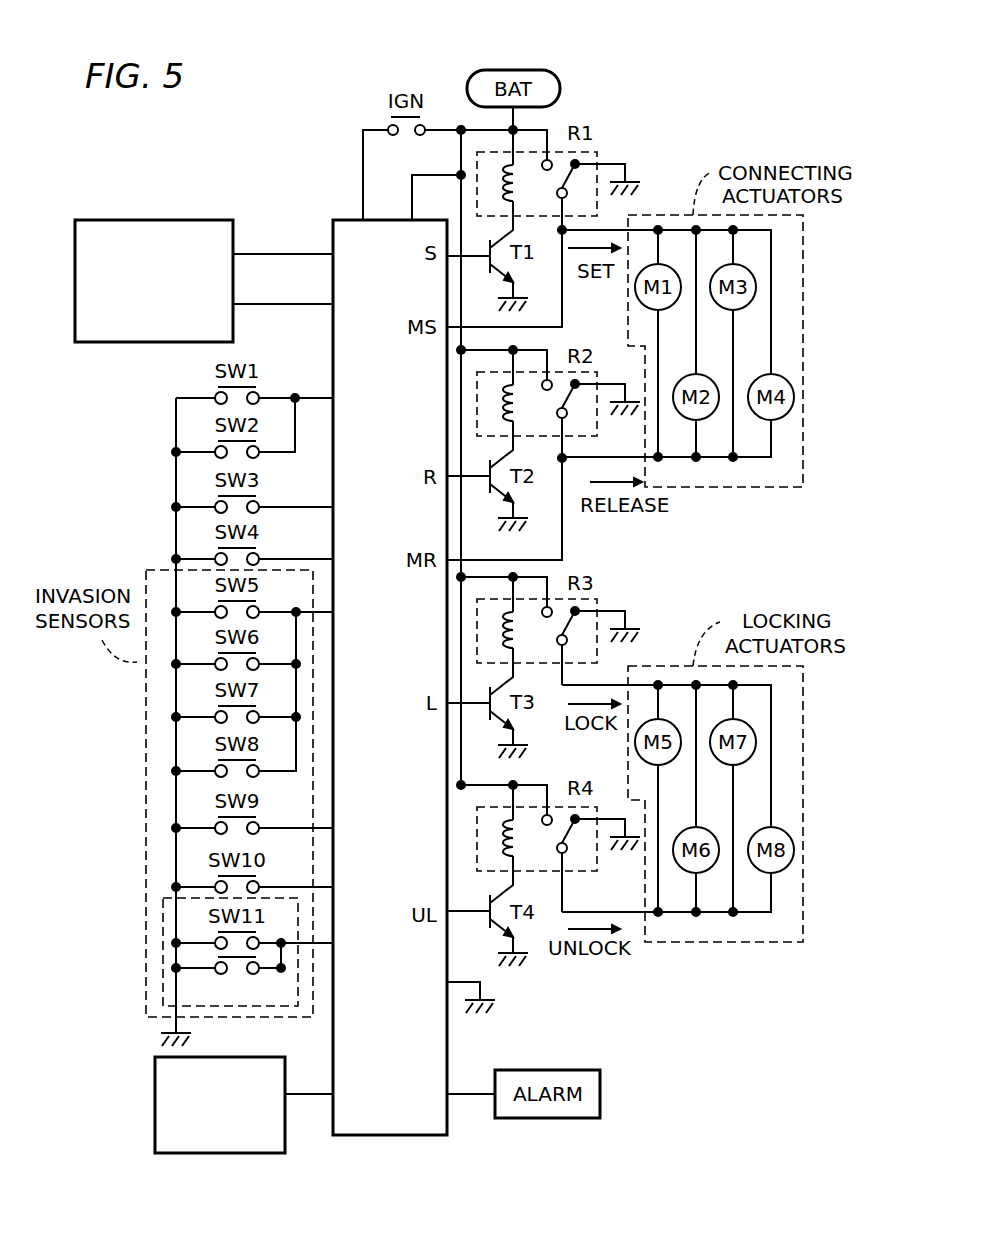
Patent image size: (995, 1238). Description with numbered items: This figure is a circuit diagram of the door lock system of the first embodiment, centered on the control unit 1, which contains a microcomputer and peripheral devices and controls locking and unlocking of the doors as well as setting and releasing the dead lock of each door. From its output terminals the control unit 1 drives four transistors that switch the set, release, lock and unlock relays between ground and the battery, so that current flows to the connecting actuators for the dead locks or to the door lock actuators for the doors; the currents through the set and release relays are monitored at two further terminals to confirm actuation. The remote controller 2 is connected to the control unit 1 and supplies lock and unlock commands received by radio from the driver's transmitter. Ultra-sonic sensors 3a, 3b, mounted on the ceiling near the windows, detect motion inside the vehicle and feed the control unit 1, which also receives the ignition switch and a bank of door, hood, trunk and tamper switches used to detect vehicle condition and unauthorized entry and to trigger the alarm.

The control unit 1 is at (347, 220).
The remote controller 2 is at (152, 220).
The ultra-sonic sensor 3a is at (244, 1090).
The ultra-sonic sensor 3b is at (205, 1057).